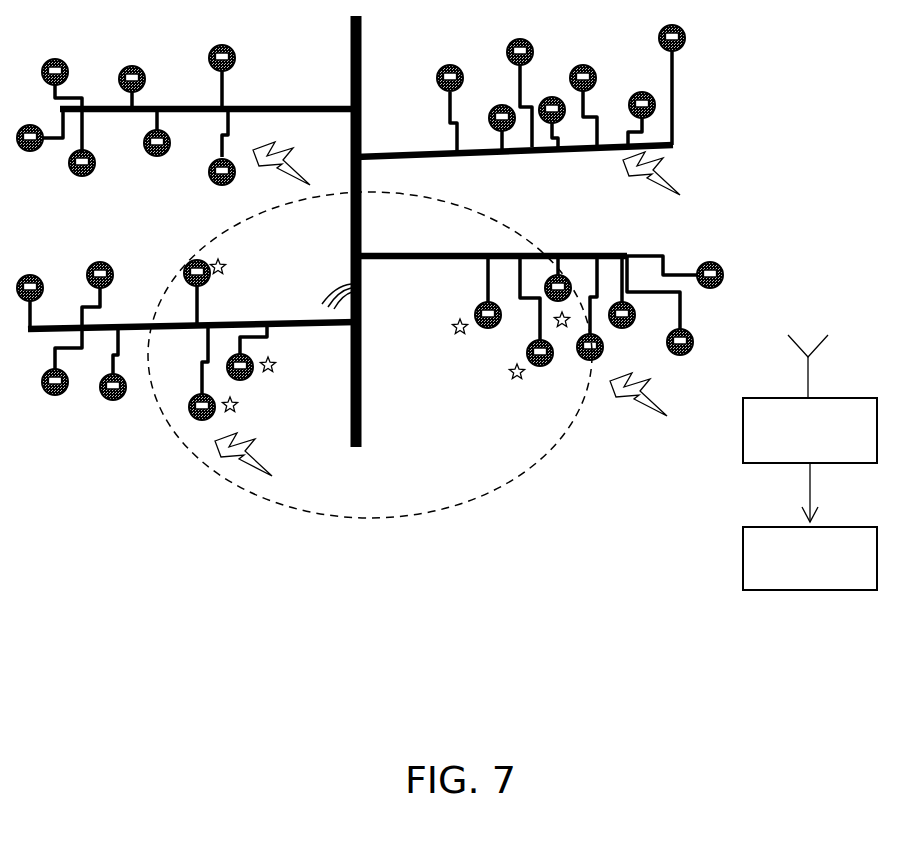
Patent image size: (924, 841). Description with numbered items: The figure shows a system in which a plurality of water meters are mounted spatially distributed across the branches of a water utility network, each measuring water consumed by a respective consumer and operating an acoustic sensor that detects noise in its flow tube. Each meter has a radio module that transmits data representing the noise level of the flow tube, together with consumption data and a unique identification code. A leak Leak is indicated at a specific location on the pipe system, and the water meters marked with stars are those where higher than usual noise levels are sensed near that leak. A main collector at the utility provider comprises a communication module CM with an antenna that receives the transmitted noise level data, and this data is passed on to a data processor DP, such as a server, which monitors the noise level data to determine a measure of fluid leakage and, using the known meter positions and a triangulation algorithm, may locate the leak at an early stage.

The leak Leak is at (337, 272).
The communication module CM is at (810, 399).
The data processor DP is at (810, 558).